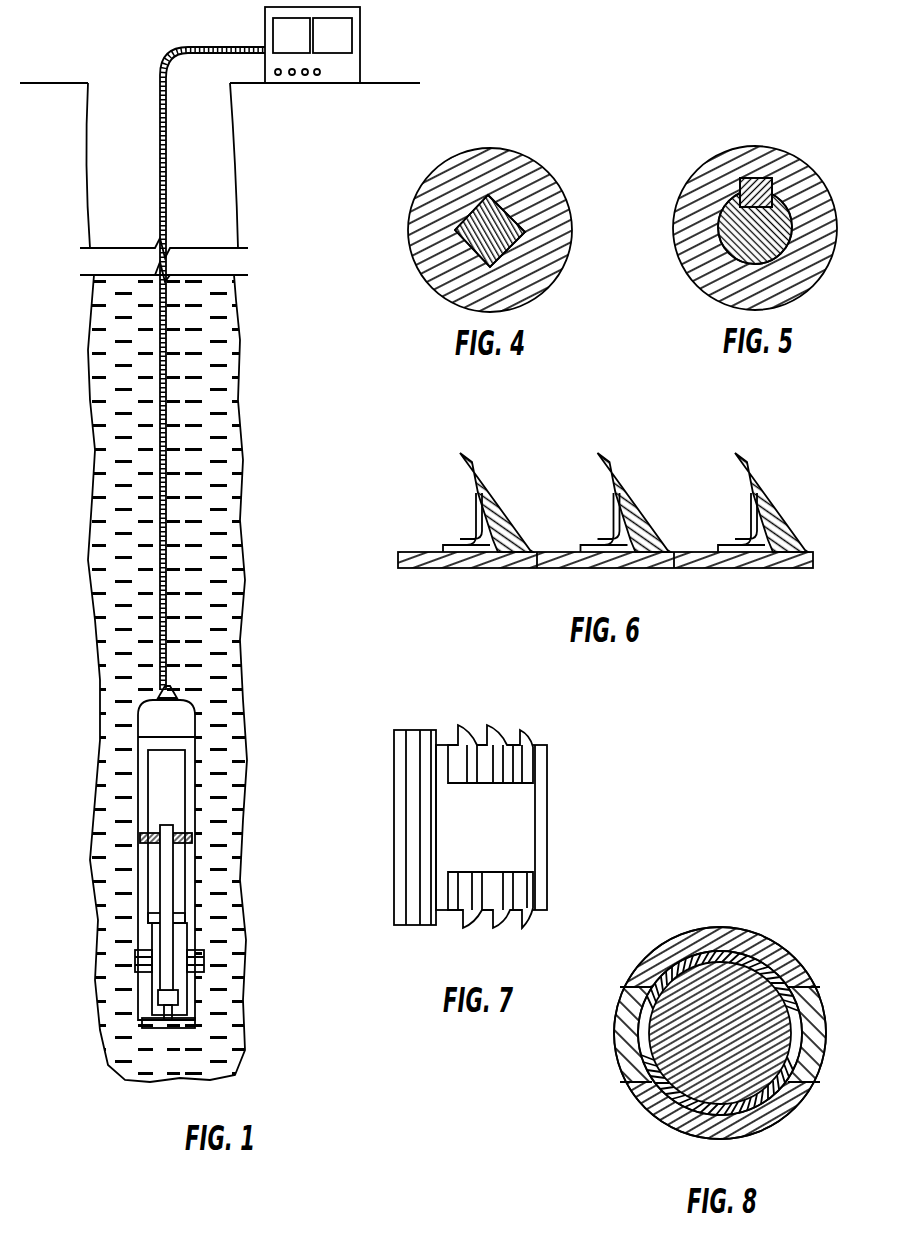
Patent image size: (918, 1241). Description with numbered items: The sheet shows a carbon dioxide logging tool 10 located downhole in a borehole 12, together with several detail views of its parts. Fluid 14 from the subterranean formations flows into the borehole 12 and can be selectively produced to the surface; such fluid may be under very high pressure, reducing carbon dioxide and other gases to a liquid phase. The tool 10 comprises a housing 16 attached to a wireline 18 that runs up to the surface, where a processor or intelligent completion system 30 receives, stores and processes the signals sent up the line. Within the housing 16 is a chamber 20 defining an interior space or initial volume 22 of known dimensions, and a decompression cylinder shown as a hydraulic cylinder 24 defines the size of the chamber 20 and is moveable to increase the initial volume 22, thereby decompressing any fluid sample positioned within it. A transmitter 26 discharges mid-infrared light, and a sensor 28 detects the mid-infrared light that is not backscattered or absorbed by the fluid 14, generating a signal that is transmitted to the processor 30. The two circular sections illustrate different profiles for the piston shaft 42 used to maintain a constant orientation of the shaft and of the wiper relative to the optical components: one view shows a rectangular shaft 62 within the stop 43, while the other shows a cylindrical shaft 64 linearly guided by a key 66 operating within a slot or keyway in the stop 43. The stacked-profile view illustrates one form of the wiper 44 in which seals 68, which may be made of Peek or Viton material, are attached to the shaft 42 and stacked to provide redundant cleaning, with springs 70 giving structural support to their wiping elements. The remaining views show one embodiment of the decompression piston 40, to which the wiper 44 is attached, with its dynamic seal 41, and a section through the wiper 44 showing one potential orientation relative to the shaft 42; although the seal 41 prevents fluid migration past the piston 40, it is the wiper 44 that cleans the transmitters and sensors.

In FIG. 1, the logging tool 10 is at (183, 907).
In FIG. 1, the borehole 12 is at (238, 205).
In FIG. 1, the fluid 14 is at (245, 1035).
In FIG. 1, the housing 16 is at (190, 890).
In FIG. 1, the wireline 18 is at (165, 157).
In FIG. 1, the chamber 20 is at (174, 1028).
In FIG. 1, the initial volume 22 is at (162, 1028).
In FIG. 1, the hydraulic cylinder 24 is at (167, 880).
In FIG. 1, the transmitter 26 is at (135, 957).
In FIG. 1, the sensor 28 is at (200, 962).
In FIG. 1, the processor or intelligent completion system 30 is at (353, 67).
In FIG. 7, the decompression piston 40 is at (400, 857).
In FIG. 8, the decompression piston 40 is at (816, 1000).
In FIG. 7, the dynamic seal 41 is at (420, 928).
In FIG. 8, the piston shaft 42 is at (765, 1052).
In FIG. 4, the stop 43 is at (533, 182).
In FIG. 5, the stop 43 is at (803, 273).
In FIG. 7, the wiper 44 is at (497, 728).
In FIG. 8, the wiper 44 is at (687, 938).
In FIG. 4, the rectangular shaft 62 is at (456, 222).
In FIG. 5, the cylindrical shaft 64 is at (728, 207).
In FIG. 5, the key 66 is at (750, 178).
In FIG. 6, the seals 68 is at (442, 565).
In FIG. 6, the springs 70 is at (477, 540).